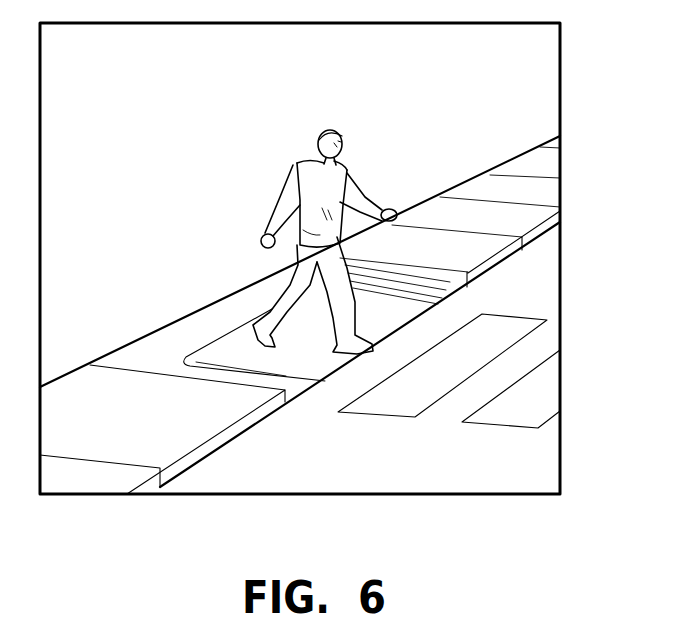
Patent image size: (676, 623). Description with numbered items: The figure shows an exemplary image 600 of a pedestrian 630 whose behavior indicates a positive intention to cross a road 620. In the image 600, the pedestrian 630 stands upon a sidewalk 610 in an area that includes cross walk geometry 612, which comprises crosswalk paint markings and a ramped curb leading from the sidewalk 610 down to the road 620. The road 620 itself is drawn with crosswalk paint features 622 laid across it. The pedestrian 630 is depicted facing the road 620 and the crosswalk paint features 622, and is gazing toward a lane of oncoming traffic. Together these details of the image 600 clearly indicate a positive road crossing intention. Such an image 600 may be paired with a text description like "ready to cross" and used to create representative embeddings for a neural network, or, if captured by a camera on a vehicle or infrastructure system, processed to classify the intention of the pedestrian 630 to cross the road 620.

The image 600 is at (560, 93).
The sidewalk 610 is at (102, 428).
The cross walk geometry 612 is at (300, 365).
The road 620 is at (515, 457).
The crosswalk paint features 622 is at (497, 430).
The pedestrian 630 is at (300, 186).